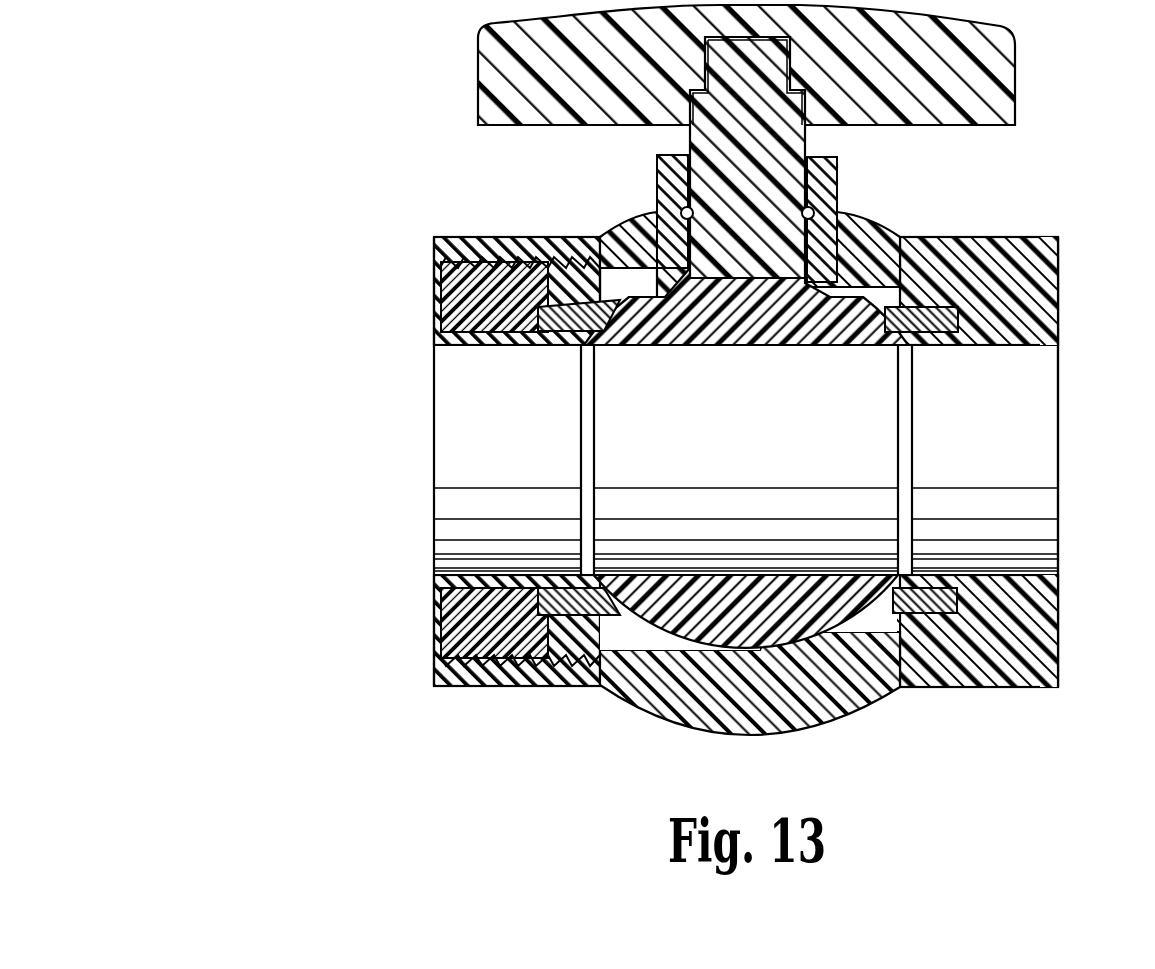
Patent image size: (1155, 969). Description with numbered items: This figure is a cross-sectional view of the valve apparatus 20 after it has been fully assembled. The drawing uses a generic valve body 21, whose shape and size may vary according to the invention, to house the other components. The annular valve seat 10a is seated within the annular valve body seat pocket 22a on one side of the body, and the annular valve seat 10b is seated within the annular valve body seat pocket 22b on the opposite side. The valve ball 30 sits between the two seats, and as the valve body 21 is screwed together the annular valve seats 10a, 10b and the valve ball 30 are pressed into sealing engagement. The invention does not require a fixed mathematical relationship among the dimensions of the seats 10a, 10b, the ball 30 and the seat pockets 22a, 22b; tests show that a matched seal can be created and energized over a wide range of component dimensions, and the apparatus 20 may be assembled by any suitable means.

The valve apparatus 20 is at (372, 128).
The valve body 21 is at (990, 288).
The annular valve body seat pocket 22a is at (500, 318).
The annular valve body seat pocket 22b is at (983, 343).
The annular valve seat 10a is at (550, 310).
The annular valve seat 10b is at (965, 320).
The valve ball 30 is at (826, 362).